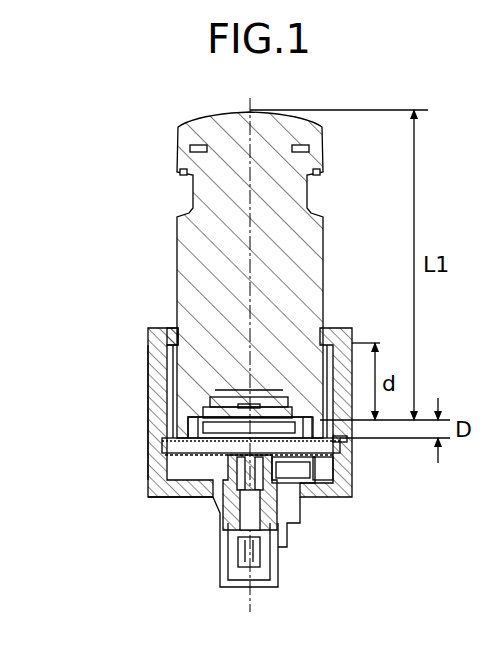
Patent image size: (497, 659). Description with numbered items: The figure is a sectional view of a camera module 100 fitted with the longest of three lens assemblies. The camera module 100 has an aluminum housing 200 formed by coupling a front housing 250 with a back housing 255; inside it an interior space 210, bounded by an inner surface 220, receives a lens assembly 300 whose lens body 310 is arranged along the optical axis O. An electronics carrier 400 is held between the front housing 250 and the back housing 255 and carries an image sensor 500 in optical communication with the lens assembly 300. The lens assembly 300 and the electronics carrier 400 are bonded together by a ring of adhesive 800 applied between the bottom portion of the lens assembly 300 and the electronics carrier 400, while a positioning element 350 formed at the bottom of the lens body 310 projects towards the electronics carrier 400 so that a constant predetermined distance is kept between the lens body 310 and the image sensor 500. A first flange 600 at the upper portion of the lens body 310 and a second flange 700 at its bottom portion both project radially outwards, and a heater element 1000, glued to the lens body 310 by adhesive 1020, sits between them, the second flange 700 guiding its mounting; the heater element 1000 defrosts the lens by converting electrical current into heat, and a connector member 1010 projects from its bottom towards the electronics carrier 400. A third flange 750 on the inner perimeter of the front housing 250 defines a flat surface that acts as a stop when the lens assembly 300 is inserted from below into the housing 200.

The camera module 100 is at (148, 136).
The optical axis O is at (251, 101).
The lens assembly 300 is at (324, 249).
The lens body 310 is at (185, 216).
The third flange 750 is at (170, 326).
The first flange 600 is at (150, 326).
The adhesive 1020 is at (150, 367).
The heater element 1000 is at (161, 383).
The second flange 700 is at (166, 431).
The housing 200 is at (154, 436).
The positioning element 350 is at (165, 442).
The front housing 250 is at (157, 482).
The image sensor 500 is at (187, 483).
The back housing 255 is at (213, 503).
The connector member 1010 is at (218, 574).
The inner surface 220 is at (322, 328).
The adhesive 800 is at (348, 441).
The electronics carrier 400 is at (336, 448).
The interior space 210 is at (332, 475).